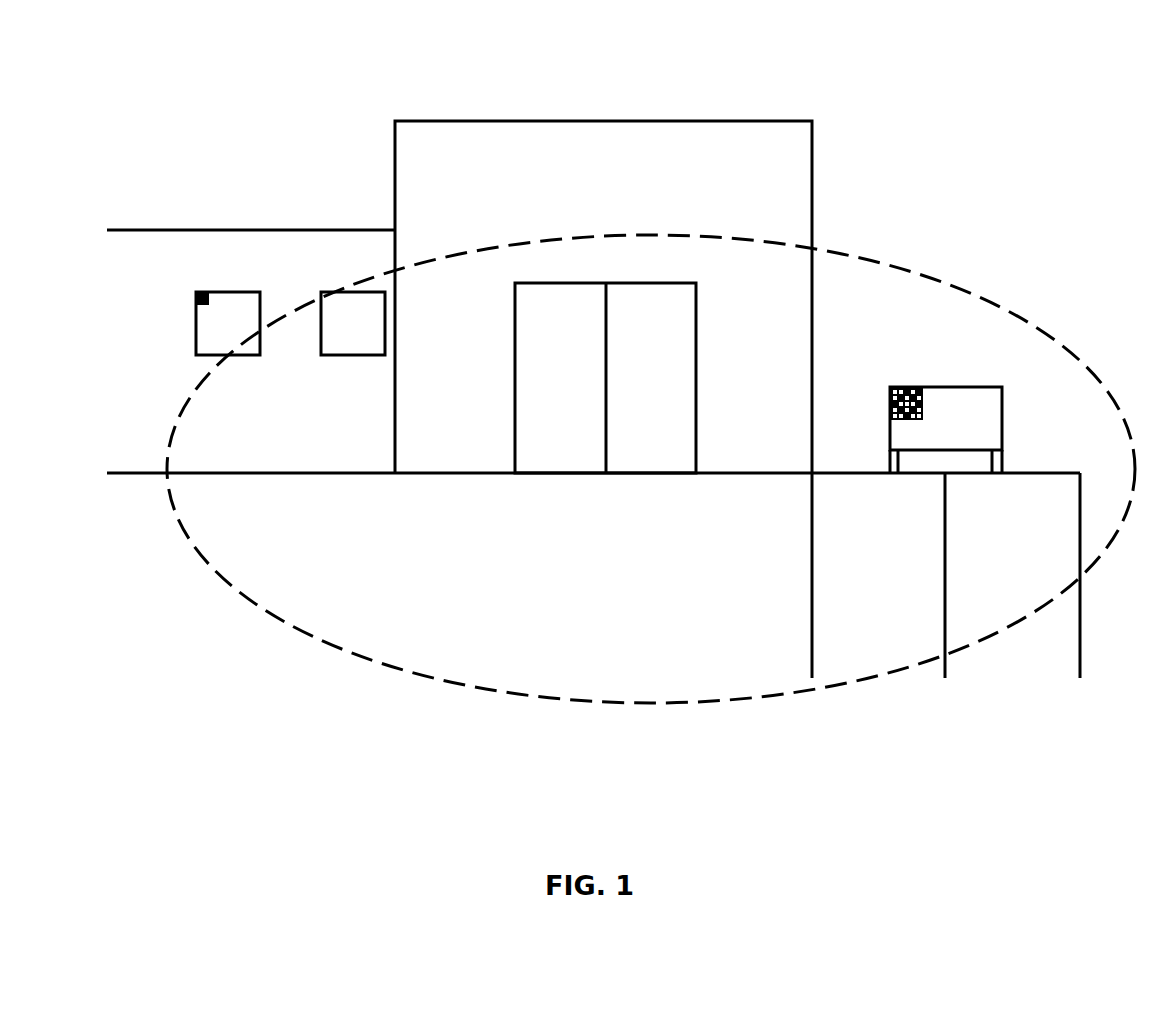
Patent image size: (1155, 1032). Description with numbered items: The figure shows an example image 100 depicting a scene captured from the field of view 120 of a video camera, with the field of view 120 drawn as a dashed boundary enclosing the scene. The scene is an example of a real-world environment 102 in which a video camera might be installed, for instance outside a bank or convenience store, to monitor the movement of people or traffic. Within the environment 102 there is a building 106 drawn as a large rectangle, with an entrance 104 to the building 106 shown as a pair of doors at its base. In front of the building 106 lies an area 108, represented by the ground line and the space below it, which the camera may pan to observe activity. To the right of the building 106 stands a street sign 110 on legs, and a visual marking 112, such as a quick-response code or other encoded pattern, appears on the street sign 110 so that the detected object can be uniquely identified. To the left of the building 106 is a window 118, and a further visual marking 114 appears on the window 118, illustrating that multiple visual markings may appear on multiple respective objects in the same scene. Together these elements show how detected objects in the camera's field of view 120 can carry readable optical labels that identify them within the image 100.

The image 100 is at (175, 84).
The real-world environment 102 is at (1010, 225).
The entrance 104 is at (700, 372).
The building 106 is at (812, 210).
The area 108 is at (605, 568).
The street sign 110 is at (1002, 418).
The visual marking 112 is at (898, 383).
The visual marking 114 is at (196, 292).
The window 118 is at (230, 292).
The field of view 120 is at (1017, 313).